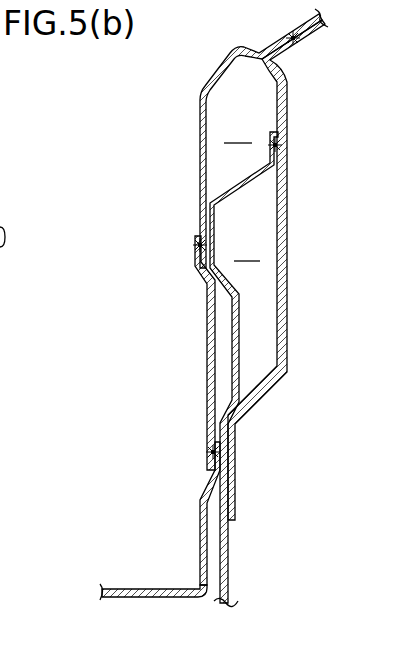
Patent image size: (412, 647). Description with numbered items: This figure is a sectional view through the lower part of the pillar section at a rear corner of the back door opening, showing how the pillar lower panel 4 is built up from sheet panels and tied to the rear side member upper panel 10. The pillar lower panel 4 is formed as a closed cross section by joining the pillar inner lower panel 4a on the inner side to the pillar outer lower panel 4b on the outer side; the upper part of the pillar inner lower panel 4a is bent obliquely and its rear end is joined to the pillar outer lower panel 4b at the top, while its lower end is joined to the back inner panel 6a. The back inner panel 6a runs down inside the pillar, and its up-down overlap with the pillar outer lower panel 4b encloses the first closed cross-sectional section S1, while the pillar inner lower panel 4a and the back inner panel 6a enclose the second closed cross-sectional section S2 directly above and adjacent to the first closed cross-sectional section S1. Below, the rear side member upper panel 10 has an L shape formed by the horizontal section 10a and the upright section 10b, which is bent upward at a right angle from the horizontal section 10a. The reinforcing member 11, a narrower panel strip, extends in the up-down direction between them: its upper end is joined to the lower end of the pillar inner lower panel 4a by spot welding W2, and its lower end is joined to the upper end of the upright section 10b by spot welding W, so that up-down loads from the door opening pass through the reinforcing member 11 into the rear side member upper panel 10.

The pillar lower panel 4 is at (242, 264).
The pillar inner lower panel 4a is at (200, 145).
The pillar outer lower panel 4b is at (284, 230).
The back inner panel 6a is at (237, 333).
The rear side member upper panel 10 is at (145, 521).
The horizontal section 10a is at (171, 589).
The upright section 10b is at (209, 485).
The reinforcing member 11 is at (207, 350).
The spot welding W is at (213, 452).
The spot welding W2 is at (200, 247).
The first closed cross-sectional section S1 is at (247, 246).
The second closed cross-sectional section S2 is at (238, 127).